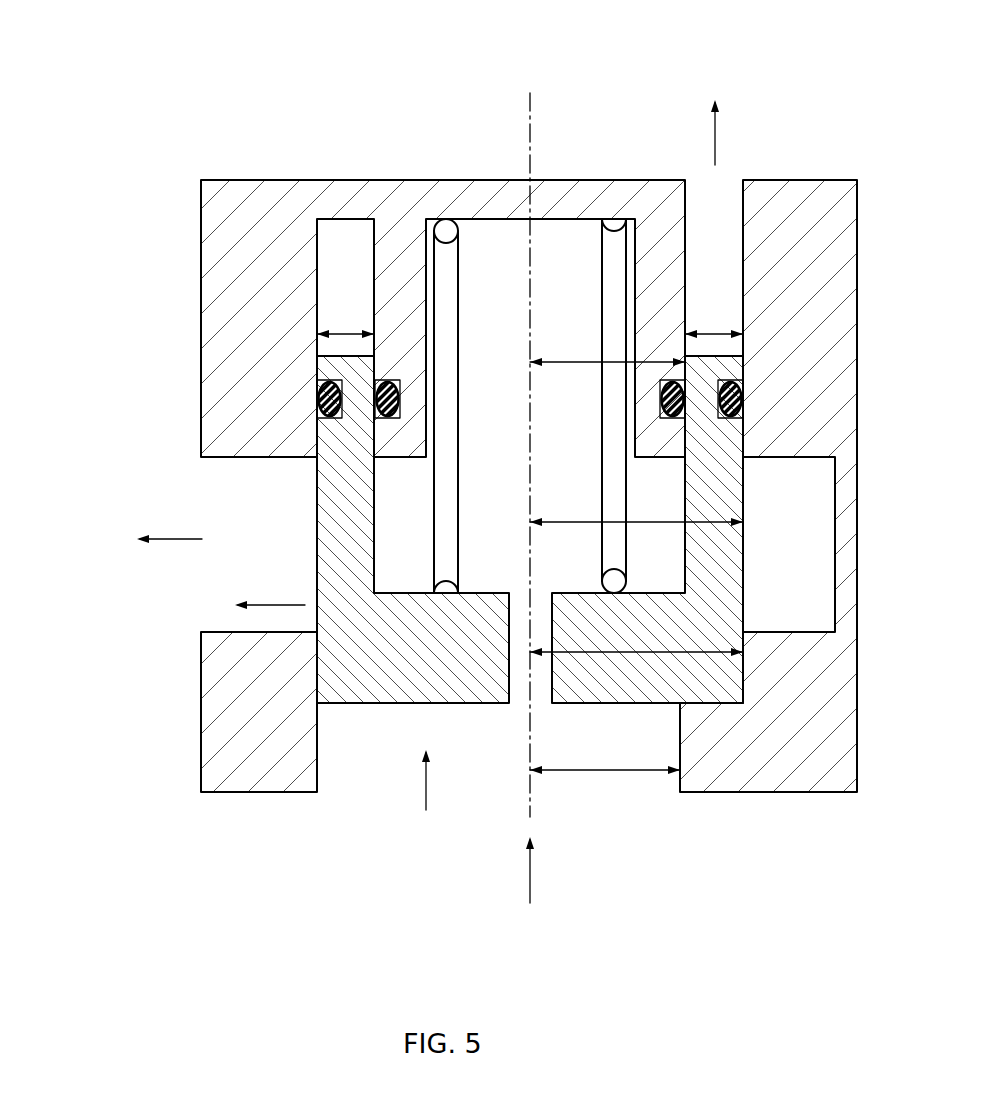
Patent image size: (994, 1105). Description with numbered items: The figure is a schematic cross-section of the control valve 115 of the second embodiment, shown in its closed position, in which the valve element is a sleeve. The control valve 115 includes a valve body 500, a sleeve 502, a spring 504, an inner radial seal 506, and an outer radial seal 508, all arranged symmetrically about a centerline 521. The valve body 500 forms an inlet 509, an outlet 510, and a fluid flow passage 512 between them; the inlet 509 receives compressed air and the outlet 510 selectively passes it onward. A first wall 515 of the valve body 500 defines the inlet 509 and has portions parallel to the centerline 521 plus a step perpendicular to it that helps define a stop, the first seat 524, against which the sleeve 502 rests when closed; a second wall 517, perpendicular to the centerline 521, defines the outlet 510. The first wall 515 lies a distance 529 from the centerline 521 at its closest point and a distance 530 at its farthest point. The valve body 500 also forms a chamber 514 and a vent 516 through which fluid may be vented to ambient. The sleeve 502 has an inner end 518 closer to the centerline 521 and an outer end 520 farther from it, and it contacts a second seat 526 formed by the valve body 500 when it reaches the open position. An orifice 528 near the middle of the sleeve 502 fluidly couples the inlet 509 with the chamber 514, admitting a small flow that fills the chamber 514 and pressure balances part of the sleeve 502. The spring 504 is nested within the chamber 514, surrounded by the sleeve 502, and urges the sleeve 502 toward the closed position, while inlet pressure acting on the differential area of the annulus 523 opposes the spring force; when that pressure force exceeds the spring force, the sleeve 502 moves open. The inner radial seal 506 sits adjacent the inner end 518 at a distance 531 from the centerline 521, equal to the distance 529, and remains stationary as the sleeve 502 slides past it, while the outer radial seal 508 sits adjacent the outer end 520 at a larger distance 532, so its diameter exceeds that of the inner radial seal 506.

The control valve 115 is at (318, 88).
The valve body 500 is at (224, 186).
The sleeve 502 is at (447, 690).
The spring 504 is at (448, 288).
The inner radial seal 506 is at (402, 398).
The outer radial seal 508 is at (317, 400).
The inlet 509 is at (512, 797).
The outlet 510 is at (278, 554).
The fluid flow passage 512 is at (290, 605).
The chamber 514 is at (588, 469).
The first wall 515 is at (317, 668).
The vent 516 is at (728, 182).
The second wall 517 is at (206, 458).
The inner end 518 is at (375, 238).
The outer end 520 is at (317, 238).
The centerline 521 is at (524, 110).
The annulus 523 is at (345, 334).
The first seat 524 is at (685, 705).
The second seat 526 is at (374, 458).
The orifice 528 is at (540, 696).
The distance 529 is at (608, 772).
The distance 530 is at (638, 651).
The distance 531 is at (575, 362).
The distance 532 is at (575, 524).